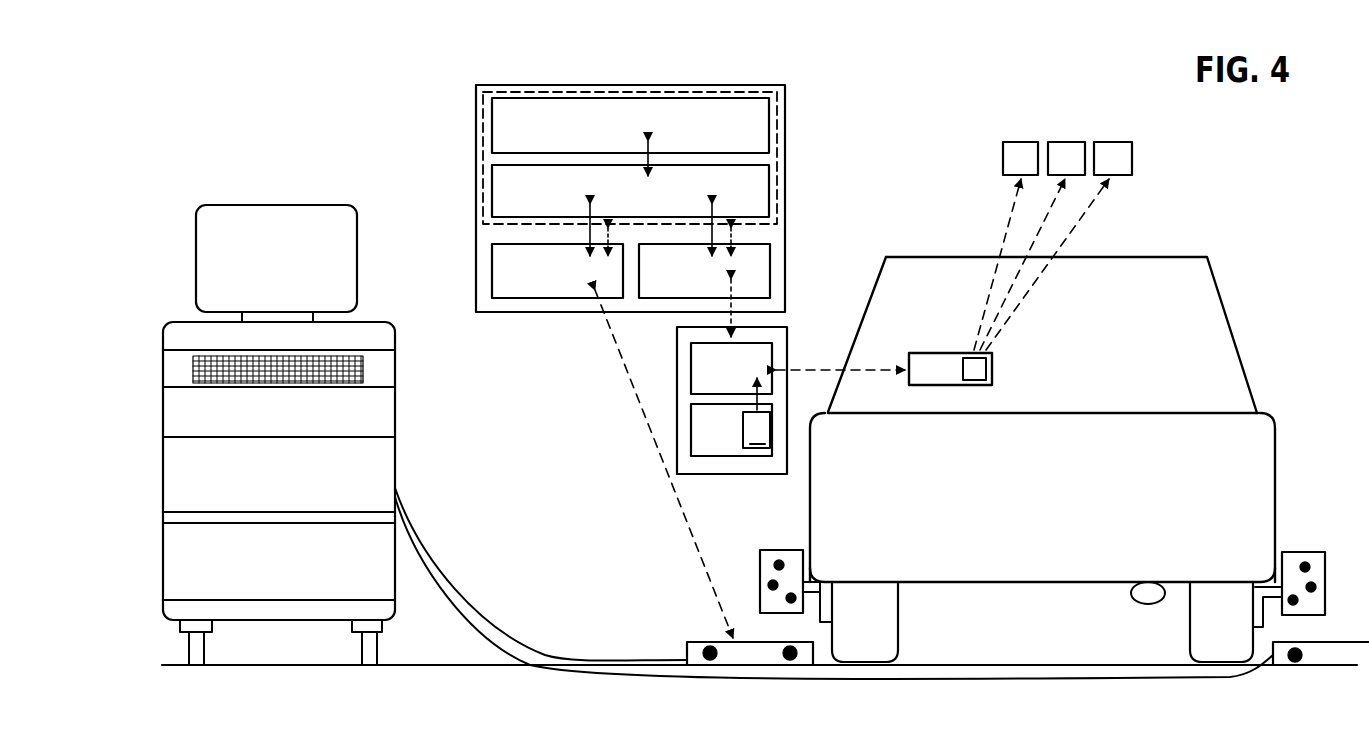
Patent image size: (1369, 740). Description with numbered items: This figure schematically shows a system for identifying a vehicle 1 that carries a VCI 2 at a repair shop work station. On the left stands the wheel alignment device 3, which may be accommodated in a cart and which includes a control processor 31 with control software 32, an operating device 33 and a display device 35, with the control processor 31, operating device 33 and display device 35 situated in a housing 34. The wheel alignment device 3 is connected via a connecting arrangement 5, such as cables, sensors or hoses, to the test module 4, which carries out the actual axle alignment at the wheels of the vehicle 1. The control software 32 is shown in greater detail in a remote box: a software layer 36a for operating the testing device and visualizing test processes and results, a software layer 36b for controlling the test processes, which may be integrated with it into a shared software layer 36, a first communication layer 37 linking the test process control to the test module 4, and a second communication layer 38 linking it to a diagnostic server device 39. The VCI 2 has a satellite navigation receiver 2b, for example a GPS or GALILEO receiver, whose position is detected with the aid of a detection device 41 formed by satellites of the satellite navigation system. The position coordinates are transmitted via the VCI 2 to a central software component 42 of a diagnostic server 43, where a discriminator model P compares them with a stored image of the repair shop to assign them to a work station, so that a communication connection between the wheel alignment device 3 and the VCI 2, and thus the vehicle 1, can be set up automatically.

The vehicle 1 is at (1158, 257).
The VCI 2 is at (938, 362).
The satellite navigation receiver 2b is at (977, 370).
The wheel alignment device 3 is at (150, 422).
The test module 4 is at (760, 573).
The connecting arrangement 5 is at (470, 632).
The control processor 31 is at (185, 477).
The control software 32 is at (530, 312).
The operating device 33 is at (193, 368).
The housing 34 is at (163, 330).
The display device 35 is at (216, 262).
The shared software layer 36 is at (483, 122).
The software layer 36a is at (571, 139).
The software layer 36b is at (571, 204).
The first communication layer 37 is at (571, 286).
The second communication layer 38 is at (703, 286).
The diagnostic server device 39 is at (731, 384).
The detection device 41 is at (1113, 142).
The central software component 42 is at (731, 444).
The diagnostic server 43 is at (677, 417).